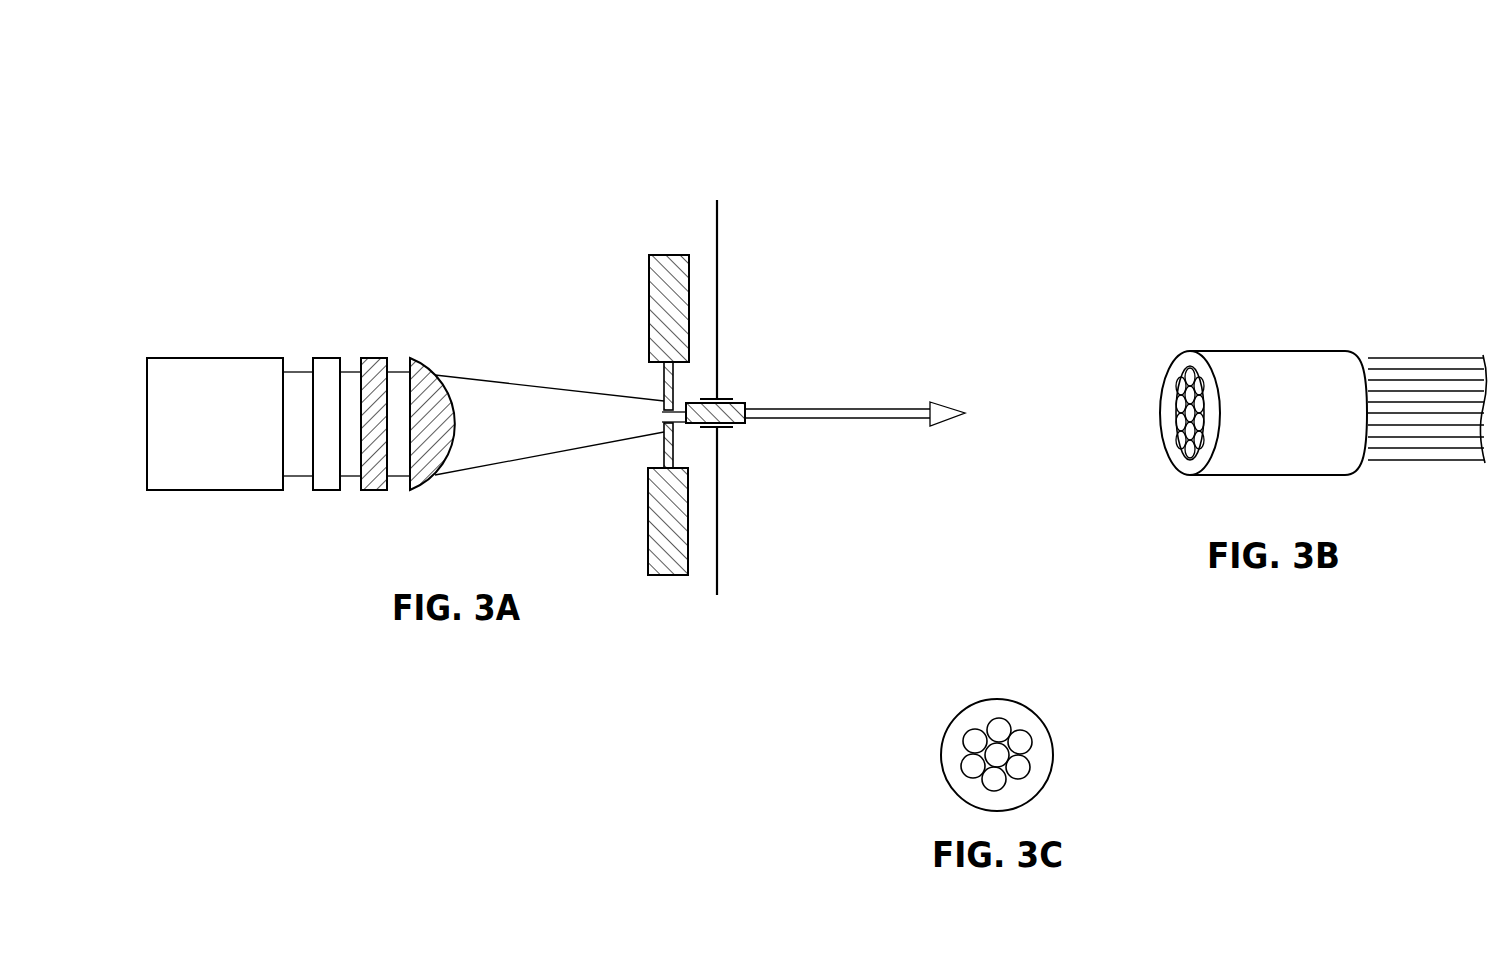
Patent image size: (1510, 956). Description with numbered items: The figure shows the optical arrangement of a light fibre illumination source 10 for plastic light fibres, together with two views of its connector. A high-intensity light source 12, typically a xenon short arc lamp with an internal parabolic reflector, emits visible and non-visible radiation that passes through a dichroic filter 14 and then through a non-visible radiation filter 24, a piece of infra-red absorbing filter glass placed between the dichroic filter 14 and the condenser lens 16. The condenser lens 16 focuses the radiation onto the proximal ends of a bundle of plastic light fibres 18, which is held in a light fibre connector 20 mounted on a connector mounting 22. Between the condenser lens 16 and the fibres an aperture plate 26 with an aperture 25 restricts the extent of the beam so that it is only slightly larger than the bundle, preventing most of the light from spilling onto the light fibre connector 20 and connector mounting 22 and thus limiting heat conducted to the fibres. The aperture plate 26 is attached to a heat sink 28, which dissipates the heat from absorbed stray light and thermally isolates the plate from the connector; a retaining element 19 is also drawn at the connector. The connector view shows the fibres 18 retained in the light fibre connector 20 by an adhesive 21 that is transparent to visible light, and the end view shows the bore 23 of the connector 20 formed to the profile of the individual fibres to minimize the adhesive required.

In FIG. 3A, the light fibre illumination source 10 is at (372, 308).
In FIG. 3A, the high-intensity light source 12 is at (222, 459).
In FIG. 3A, the dichroic filter 14 is at (322, 491).
In FIG. 3A, the condenser lens 16 is at (417, 492).
In FIG. 3A, the plastic light fibres 18 is at (847, 405).
In FIG. 3B, the plastic light fibres 18 is at (1138, 413).
In FIG. 3C, the plastic light fibres 18 is at (995, 677).
In FIG. 3A, the retaining clamp 19 is at (727, 398).
In FIG. 3A, the light fibre connector 20 is at (743, 423).
In FIG. 3B, the light fibre connector 20 is at (1273, 351).
In FIG. 3C, the light fibre connector 20 is at (1037, 712).
In FIG. 3B, the adhesive 21 is at (1203, 447).
In FIG. 3A, the connector mounting 22 is at (718, 505).
In FIG. 3C, the bore 23 is at (1018, 772).
In FIG. 3A, the non-visible radiation filter 24 is at (380, 491).
In FIG. 3A, the aperture 25 is at (662, 416).
In FIG. 3A, the aperture plate 26 is at (665, 387).
In FIG. 3A, the heat sink 28 is at (673, 255).